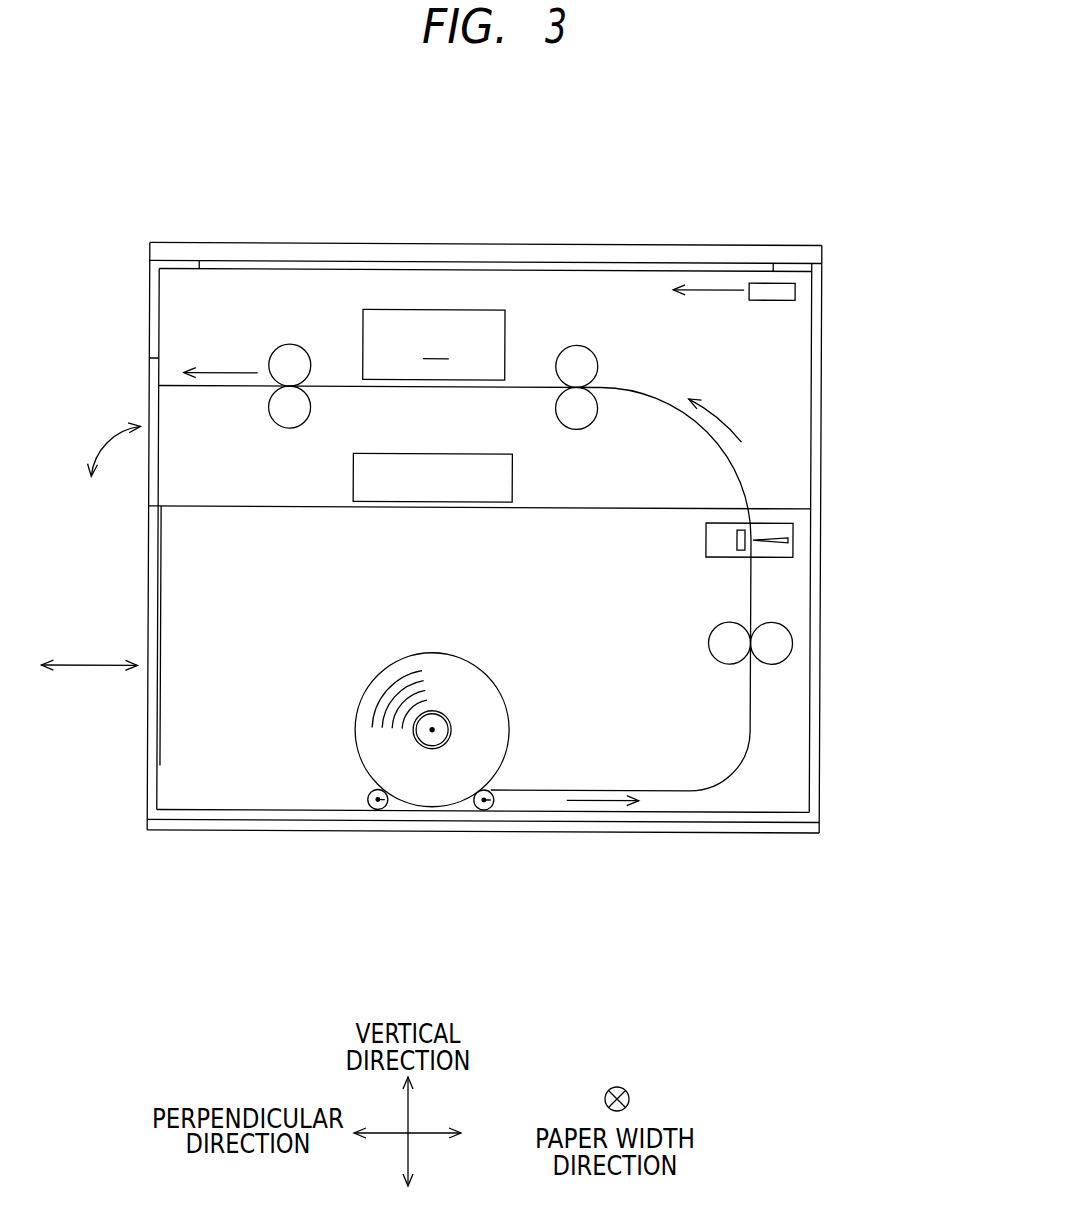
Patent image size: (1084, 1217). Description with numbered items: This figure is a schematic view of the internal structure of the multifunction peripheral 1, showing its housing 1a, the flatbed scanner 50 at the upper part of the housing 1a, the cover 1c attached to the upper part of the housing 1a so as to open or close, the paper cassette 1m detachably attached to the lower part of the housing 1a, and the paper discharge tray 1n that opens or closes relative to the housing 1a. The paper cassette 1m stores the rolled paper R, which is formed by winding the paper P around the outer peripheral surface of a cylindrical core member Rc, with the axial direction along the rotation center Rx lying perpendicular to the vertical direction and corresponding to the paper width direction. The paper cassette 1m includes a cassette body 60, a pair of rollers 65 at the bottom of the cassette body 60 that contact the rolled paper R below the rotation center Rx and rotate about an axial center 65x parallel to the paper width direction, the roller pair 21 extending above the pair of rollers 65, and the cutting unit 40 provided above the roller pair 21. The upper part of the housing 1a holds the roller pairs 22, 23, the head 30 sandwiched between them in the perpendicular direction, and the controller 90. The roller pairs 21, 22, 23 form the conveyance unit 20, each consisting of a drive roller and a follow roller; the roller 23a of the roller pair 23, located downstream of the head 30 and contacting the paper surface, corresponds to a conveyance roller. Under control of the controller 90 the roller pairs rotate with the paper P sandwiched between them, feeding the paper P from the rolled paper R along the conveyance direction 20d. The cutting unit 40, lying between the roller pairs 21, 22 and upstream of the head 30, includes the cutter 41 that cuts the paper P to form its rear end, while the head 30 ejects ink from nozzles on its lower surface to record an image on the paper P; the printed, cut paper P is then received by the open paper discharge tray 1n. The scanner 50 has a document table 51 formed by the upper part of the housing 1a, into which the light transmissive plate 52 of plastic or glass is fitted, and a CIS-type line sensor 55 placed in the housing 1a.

The multifunction peripheral 1 is at (659, 110).
The housing 1a is at (820, 372).
The cover 1c is at (249, 245).
The paper discharge tray 1n is at (148, 408).
The paper cassette 1m is at (148, 632).
The conveyance unit 20 is at (656, 365).
The conveyance direction 20d is at (724, 416).
The roller pair 21 is at (731, 663).
The roller pair 22 is at (597, 408).
The roller pair 23 is at (310, 408).
The roller 23a is at (272, 350).
The head 30 is at (434, 344).
The cutting unit 40 is at (793, 540).
The cutter 41 is at (778, 535).
The flatbed scanner 50 is at (770, 243).
The document table 51 is at (810, 270).
The light transmissive plate 52 is at (491, 247).
The line sensor 55 is at (772, 299).
The cassette body 60 is at (239, 811).
The pair of rollers 65 is at (485, 810).
The axial center 65x is at (369, 800).
The controller 90 is at (512, 478).
The rolled paper R is at (500, 678).
The core member Rc is at (450, 738).
The rotation center Rx is at (433, 728).
The paper P is at (603, 789).